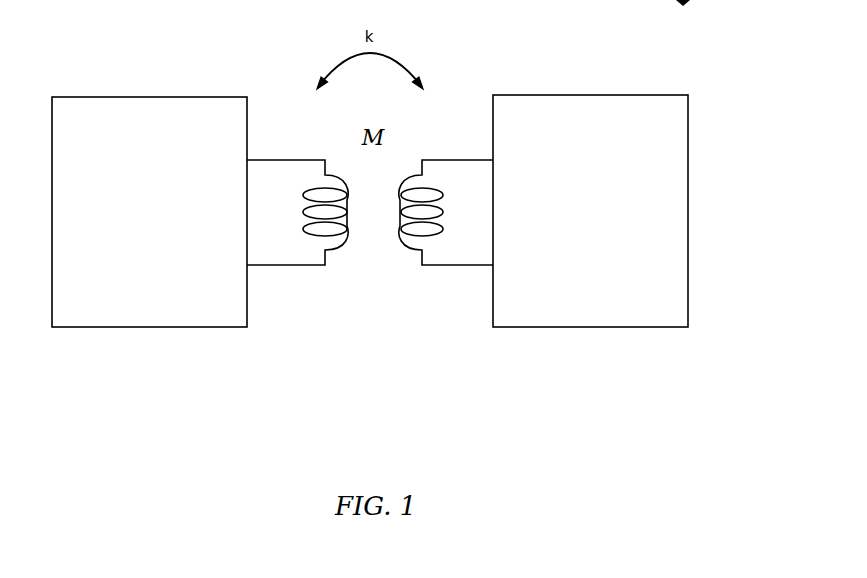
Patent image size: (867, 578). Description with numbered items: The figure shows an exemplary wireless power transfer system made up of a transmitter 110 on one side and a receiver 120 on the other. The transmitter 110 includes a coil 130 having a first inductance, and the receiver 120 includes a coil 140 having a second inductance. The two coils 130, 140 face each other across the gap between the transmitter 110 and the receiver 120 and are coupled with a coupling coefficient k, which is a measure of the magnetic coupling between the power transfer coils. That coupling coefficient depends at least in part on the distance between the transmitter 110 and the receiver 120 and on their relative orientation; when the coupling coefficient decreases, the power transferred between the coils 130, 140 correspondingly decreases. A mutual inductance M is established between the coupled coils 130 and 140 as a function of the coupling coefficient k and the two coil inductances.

The transmitter 110 is at (149, 212).
The receiver 120 is at (590, 211).
The coil 130 is at (318, 290).
The coil 140 is at (423, 290).